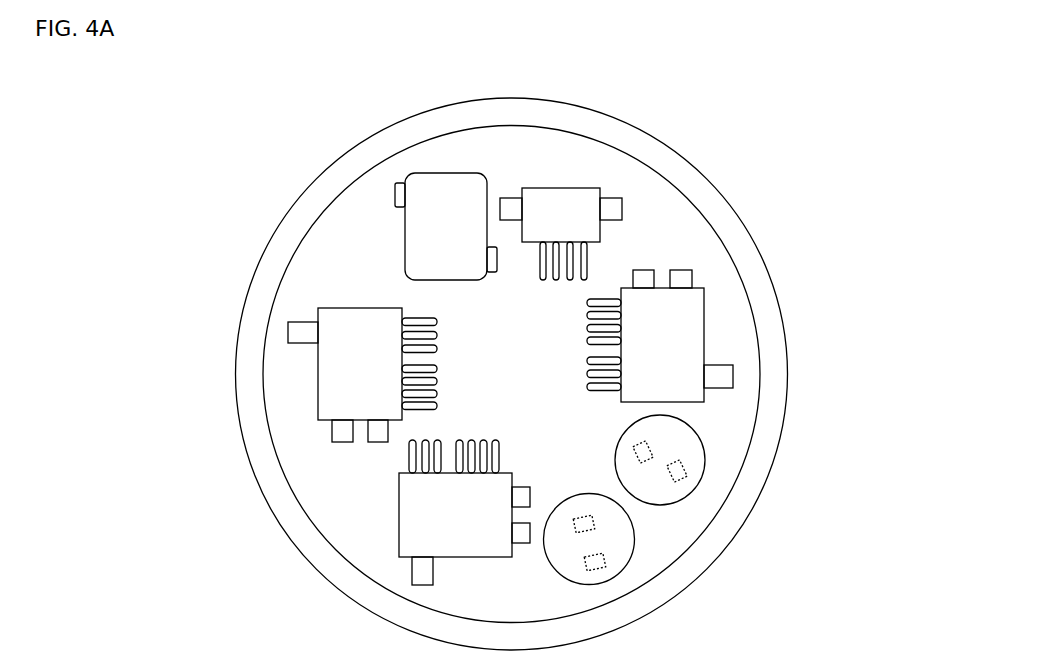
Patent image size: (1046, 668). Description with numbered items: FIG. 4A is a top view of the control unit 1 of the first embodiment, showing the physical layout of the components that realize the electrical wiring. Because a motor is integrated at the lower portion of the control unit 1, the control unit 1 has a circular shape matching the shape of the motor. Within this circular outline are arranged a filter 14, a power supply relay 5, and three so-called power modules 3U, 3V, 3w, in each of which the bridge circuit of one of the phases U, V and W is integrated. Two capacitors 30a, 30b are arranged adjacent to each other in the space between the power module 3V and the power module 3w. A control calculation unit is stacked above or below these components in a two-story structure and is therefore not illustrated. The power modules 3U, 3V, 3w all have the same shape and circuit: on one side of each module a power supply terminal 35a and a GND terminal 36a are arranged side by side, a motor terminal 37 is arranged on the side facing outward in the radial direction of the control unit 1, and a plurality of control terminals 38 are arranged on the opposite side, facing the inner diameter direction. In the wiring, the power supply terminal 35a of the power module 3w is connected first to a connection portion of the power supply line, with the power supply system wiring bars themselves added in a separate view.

The control unit 1 is at (273, 233).
The filter 14 is at (413, 173).
The power supply relay 5 is at (602, 188).
The power module 3U is at (318, 352).
The power module 3V is at (398, 525).
The power module 3w is at (740, 297).
The power supply terminal 35a is at (650, 270).
The GND terminal 36a is at (690, 285).
The motor terminal 37 is at (733, 378).
The control terminals 38 is at (610, 375).
The capacitor 30a is at (622, 568).
The capacitor 30b is at (700, 492).